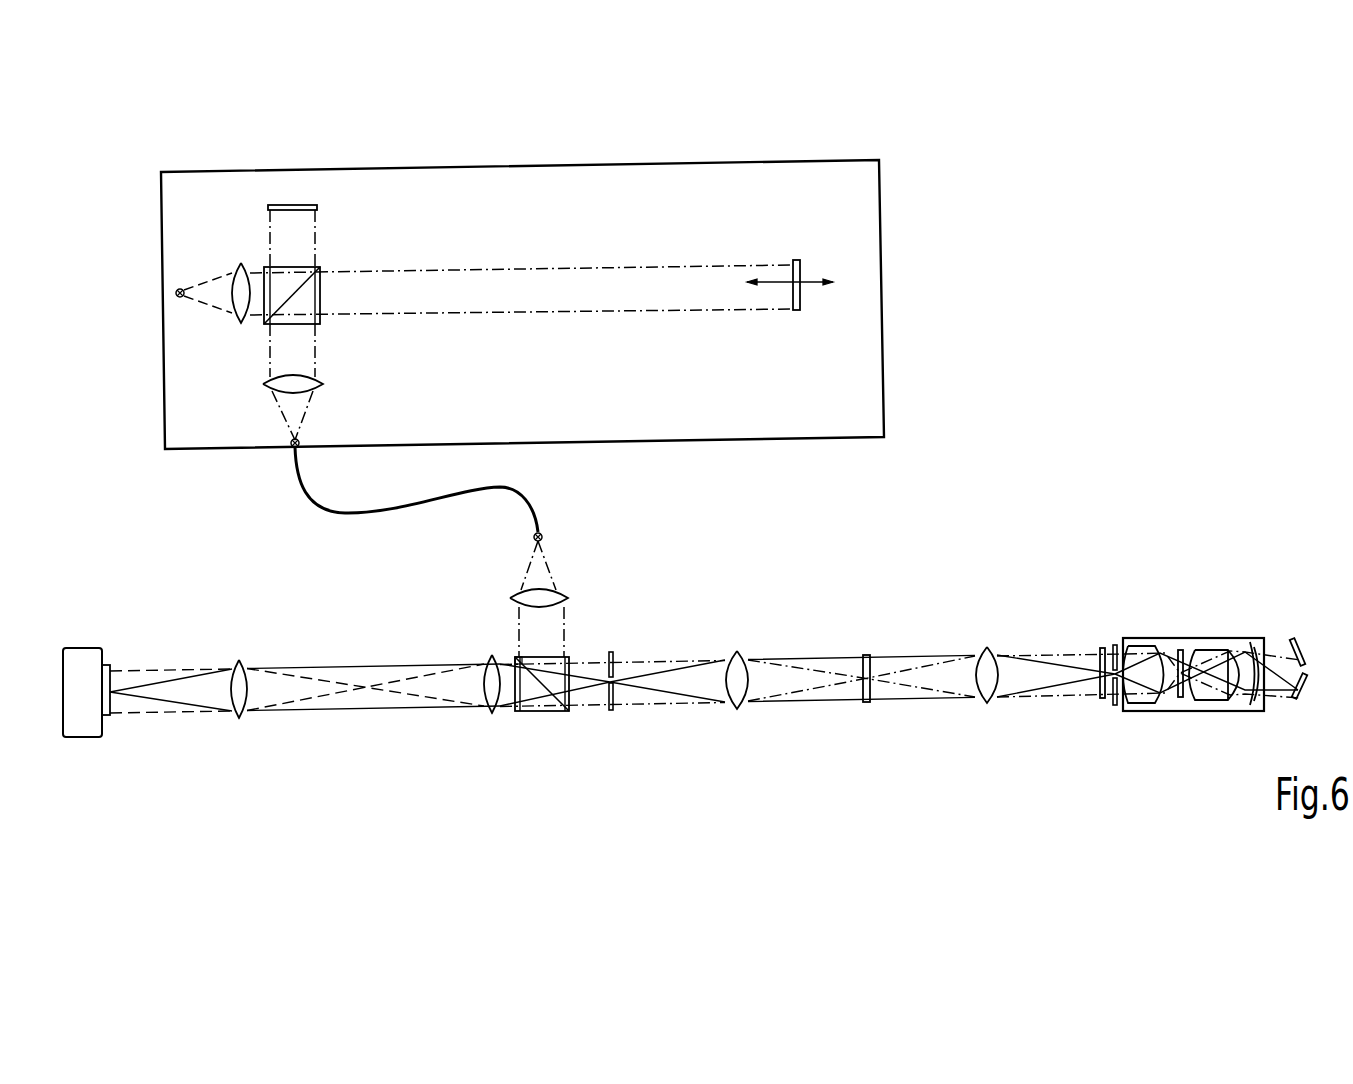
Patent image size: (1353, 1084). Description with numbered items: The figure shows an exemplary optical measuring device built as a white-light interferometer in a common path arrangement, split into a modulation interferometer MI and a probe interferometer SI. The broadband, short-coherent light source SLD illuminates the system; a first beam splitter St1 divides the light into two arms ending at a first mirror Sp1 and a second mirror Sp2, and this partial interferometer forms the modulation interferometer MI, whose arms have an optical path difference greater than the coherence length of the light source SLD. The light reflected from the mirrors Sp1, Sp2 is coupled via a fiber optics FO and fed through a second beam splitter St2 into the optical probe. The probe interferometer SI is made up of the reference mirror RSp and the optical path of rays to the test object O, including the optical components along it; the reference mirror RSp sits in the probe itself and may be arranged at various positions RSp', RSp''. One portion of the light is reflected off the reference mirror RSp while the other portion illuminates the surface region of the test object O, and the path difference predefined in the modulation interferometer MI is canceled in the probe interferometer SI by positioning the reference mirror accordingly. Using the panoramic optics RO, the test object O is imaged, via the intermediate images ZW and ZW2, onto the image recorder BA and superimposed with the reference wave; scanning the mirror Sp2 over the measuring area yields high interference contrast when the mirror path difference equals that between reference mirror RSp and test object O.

The modulation interferometer MI is at (806, 438).
The light source SLD is at (197, 310).
The first mirror Sp1 is at (266, 206).
The first beam splitter St1 is at (318, 268).
The second mirror Sp2 is at (800, 309).
The fiber optics FO is at (392, 515).
The image recorder BA is at (113, 664).
The second beam splitter St2 is at (545, 713).
The intermediate image ZW2 is at (612, 650).
The probe interferometer SI is at (804, 708).
The reference mirror RSp is at (910, 641).
The reference mirror (alternative position) RSp' is at (1070, 638).
The intermediate image ZW is at (1112, 712).
The reference mirror (alternative position) RSp'' is at (1201, 629).
The panoramic optics RO is at (1210, 715).
The test object O is at (1292, 638).